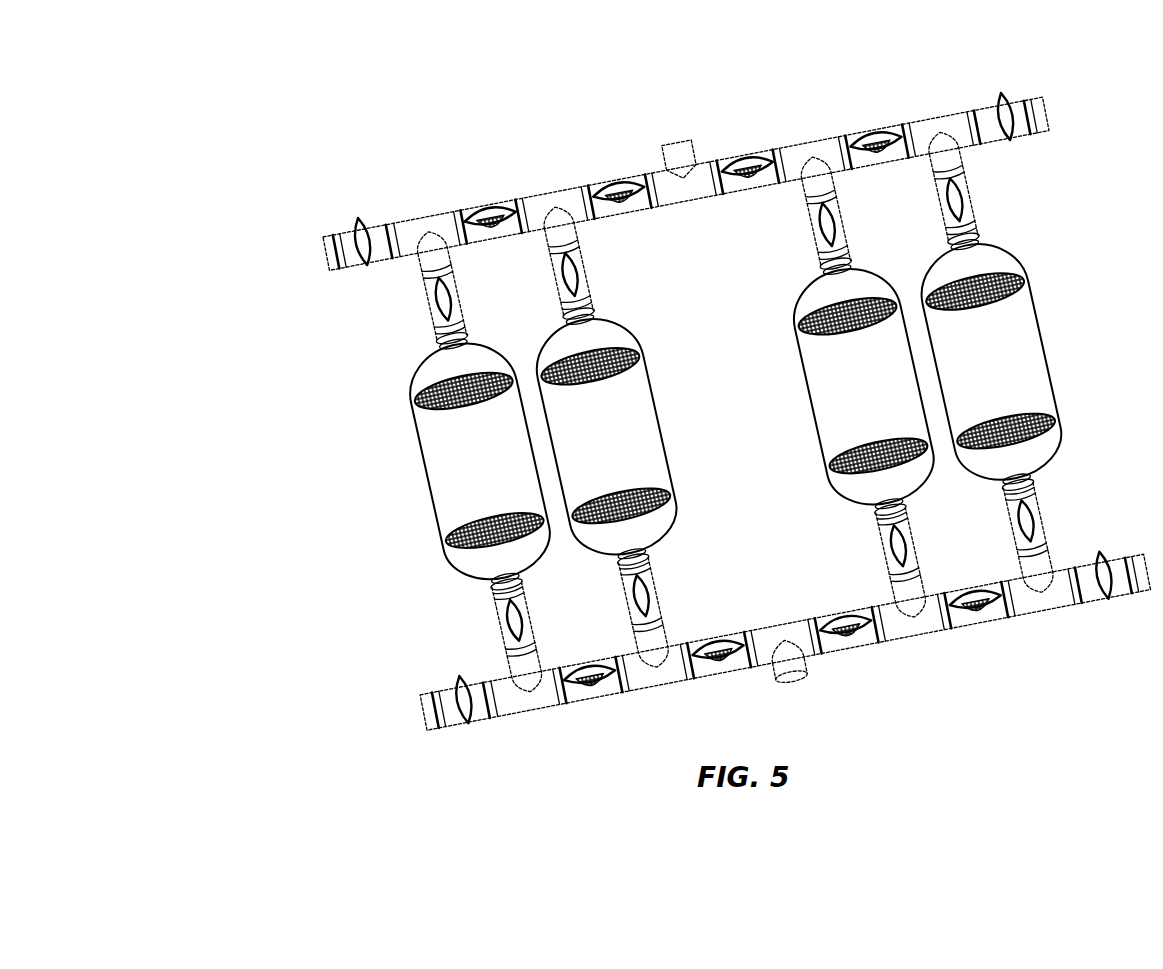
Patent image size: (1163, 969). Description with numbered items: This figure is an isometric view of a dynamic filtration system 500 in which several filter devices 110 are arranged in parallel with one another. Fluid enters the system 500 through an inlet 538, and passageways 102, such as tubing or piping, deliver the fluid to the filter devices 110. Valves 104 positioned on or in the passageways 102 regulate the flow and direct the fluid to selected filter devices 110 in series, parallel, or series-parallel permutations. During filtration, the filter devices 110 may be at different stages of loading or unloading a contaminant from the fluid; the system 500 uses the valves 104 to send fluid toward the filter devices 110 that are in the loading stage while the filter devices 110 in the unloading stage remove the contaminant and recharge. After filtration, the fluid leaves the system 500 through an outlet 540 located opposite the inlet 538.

The dynamic filtration system 500 is at (302, 196).
The passageways 102 is at (847, 237).
The valves 104 is at (457, 293).
The filter devices 110 is at (396, 386).
The inlet 538 is at (670, 143).
The outlet 540 is at (793, 683).